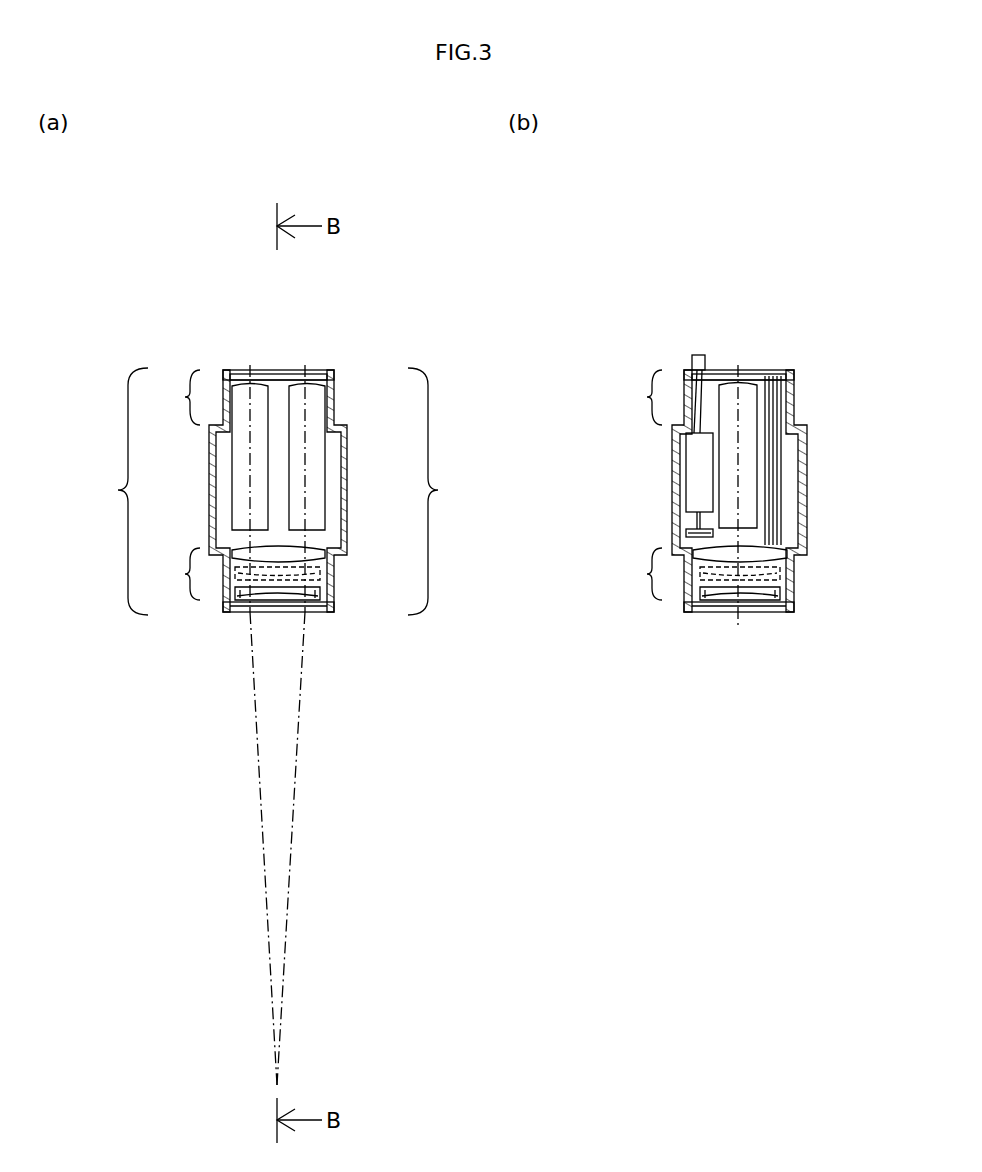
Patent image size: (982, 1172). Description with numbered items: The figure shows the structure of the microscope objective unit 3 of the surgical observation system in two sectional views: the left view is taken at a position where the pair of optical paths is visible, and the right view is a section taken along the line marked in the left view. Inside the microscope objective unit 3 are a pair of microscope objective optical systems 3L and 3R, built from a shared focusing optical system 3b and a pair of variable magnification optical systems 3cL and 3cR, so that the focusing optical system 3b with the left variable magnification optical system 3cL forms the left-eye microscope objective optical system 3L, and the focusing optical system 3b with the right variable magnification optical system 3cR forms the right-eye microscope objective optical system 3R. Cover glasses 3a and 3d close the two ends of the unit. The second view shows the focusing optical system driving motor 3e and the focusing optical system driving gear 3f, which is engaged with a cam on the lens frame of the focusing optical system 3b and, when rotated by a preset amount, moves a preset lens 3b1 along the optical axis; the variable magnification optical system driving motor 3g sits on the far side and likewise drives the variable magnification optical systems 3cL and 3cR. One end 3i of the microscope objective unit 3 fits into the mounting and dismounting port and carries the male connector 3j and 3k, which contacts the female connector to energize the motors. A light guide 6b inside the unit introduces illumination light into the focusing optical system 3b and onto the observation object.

The microscope objective unit 3 is at (134, 350).
The one end 3i is at (406, 397).
The cover glass 3d is at (312, 372).
The microscope objective optical system for the left eye 3L is at (110, 491).
The microscope objective optical system for the right eye 3R is at (446, 491).
The variable magnification optical system for the left eye 3cL is at (245, 470).
The variable magnification optical system for the right eye 3cR is at (312, 470).
The focusing optical system 3b is at (468, 573).
The lens 3b1 is at (248, 615).
The cover glass 3a is at (225, 618).
The male connector 3j is at (703, 358).
The male connector 3k is at (698, 401).
The light guide 6b is at (770, 418).
The focusing optical system driving motor 3e is at (695, 545).
The variable magnification optical system driving motor 3g is at (698, 520).
The focusing optical system driving gear 3f is at (700, 540).